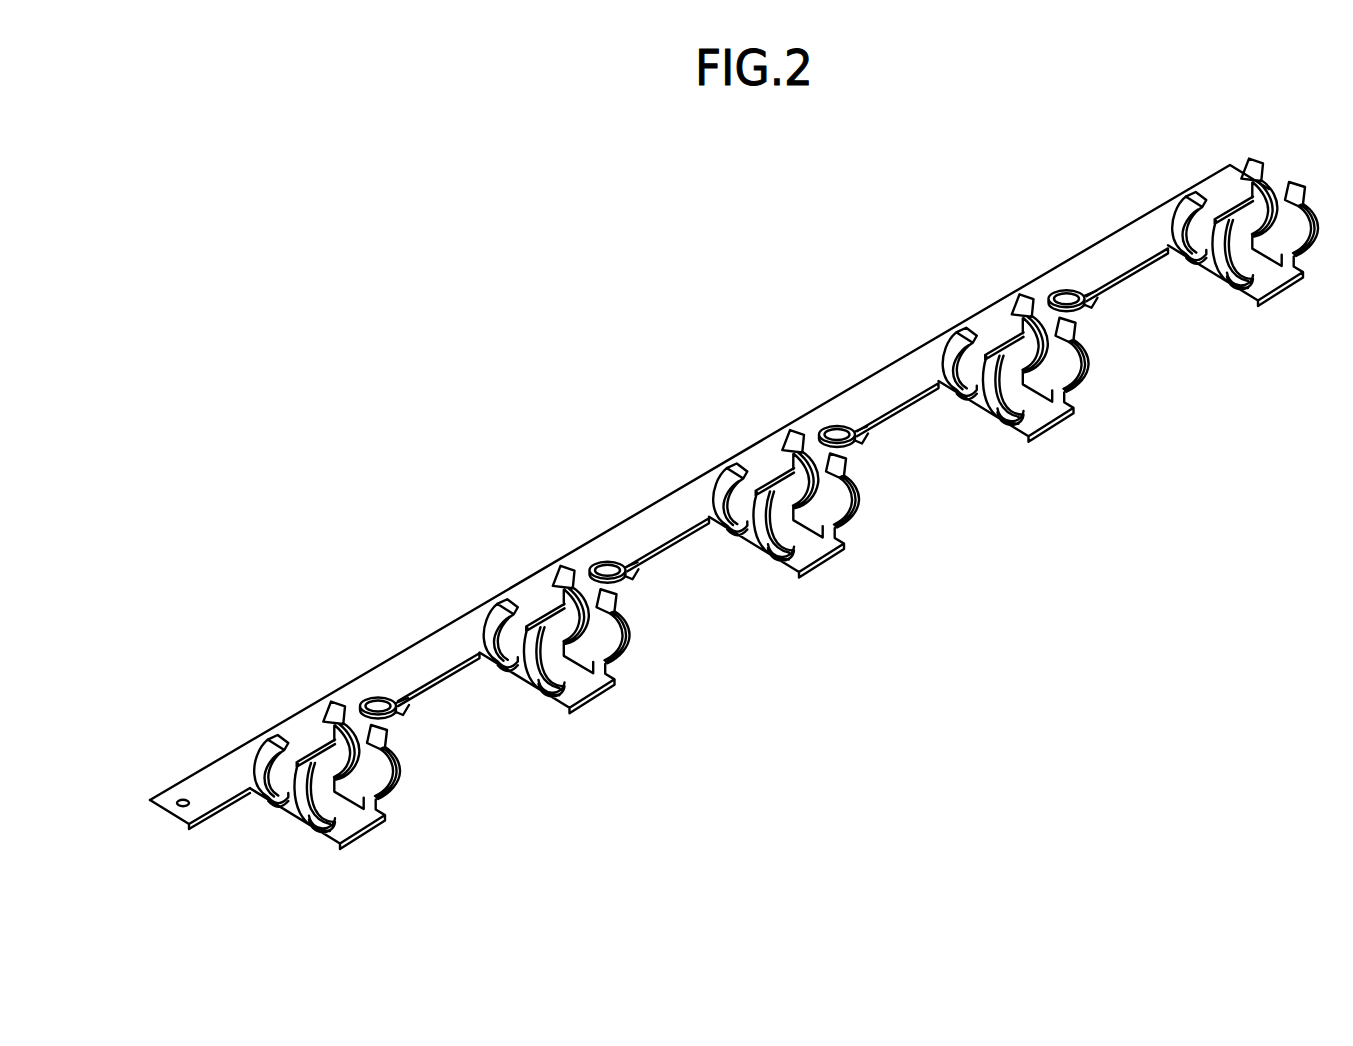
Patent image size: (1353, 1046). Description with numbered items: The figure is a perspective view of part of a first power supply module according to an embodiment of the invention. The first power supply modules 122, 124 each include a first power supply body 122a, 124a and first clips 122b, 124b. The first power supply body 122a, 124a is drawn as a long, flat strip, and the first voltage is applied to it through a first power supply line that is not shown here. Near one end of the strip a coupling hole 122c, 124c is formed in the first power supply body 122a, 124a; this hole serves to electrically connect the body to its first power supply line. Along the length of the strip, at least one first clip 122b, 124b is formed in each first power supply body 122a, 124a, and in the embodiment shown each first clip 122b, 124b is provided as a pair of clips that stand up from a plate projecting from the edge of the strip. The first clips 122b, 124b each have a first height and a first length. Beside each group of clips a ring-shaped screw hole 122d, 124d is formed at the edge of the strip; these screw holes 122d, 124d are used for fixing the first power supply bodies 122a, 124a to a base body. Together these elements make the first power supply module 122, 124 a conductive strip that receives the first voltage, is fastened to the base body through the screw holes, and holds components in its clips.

The first power supply module 122 is at (713, 522).
The first power supply module 124 is at (543, 785).
The first power supply body 122a is at (688, 497).
The first power supply body 124a is at (414, 648).
The first clip 122b is at (299, 792).
The first clip 124b is at (258, 778).
The coupling hole 122c is at (168, 753).
The coupling hole 124c is at (182, 798).
The screw hole 122d is at (554, 532).
The screw hole 124d is at (600, 563).